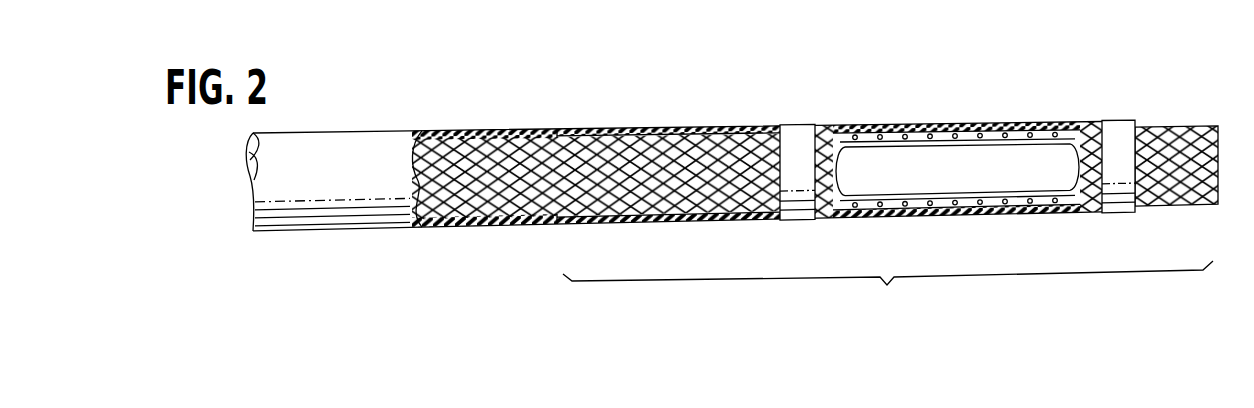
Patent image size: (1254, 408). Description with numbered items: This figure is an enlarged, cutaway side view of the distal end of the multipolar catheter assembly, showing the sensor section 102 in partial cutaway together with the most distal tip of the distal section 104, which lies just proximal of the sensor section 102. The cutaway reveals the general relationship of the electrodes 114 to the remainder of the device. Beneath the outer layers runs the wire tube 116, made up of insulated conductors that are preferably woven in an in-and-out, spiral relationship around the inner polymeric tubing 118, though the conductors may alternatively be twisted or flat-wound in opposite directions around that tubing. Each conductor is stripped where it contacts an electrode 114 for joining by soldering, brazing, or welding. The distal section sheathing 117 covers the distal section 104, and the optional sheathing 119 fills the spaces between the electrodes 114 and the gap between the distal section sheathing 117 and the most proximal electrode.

The sensor section 102 is at (888, 290).
The distal section 104 is at (357, 203).
The electrode 114 is at (800, 203).
The wire tube 116 is at (493, 167).
The distal section sheathing 117 is at (438, 136).
The inner polymeric tubing 118 is at (953, 193).
The sheathing 119 is at (662, 130).